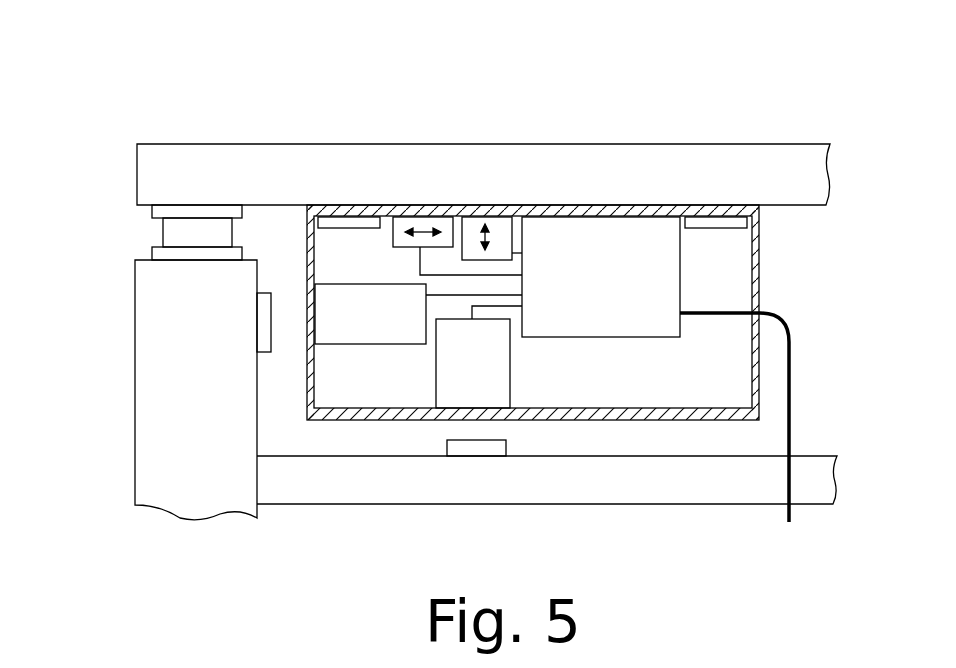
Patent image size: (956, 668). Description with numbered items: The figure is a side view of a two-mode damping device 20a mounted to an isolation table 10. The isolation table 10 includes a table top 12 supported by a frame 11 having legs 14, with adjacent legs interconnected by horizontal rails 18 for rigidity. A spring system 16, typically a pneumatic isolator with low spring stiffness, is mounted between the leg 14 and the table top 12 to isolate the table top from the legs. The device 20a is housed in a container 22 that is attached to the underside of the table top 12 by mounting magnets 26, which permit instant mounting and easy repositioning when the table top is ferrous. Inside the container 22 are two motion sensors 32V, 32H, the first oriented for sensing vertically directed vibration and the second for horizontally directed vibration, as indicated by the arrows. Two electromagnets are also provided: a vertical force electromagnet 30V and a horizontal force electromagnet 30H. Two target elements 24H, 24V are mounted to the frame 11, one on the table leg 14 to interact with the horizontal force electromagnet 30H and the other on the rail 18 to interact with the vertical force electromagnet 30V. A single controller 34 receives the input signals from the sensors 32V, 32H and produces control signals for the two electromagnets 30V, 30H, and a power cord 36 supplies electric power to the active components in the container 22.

The isolation table 10 is at (141, 108).
The frame 11 is at (118, 345).
The table top 12 is at (268, 144).
The leg 14 is at (135, 447).
The spring system 16 is at (163, 236).
The horizontal rail 18 is at (355, 488).
The damper device 20a is at (595, 307).
The container 22 is at (758, 250).
The target element 24H is at (273, 318).
The target element 24V is at (506, 444).
The mounting magnets 26 is at (348, 222).
The horizontal force electromagnet 30H is at (388, 327).
The vertical force electromagnet 30V is at (495, 365).
The motion sensor 32H is at (418, 222).
The motion sensor 32V is at (500, 223).
The controller 34 is at (606, 273).
The power cord 36 is at (790, 392).